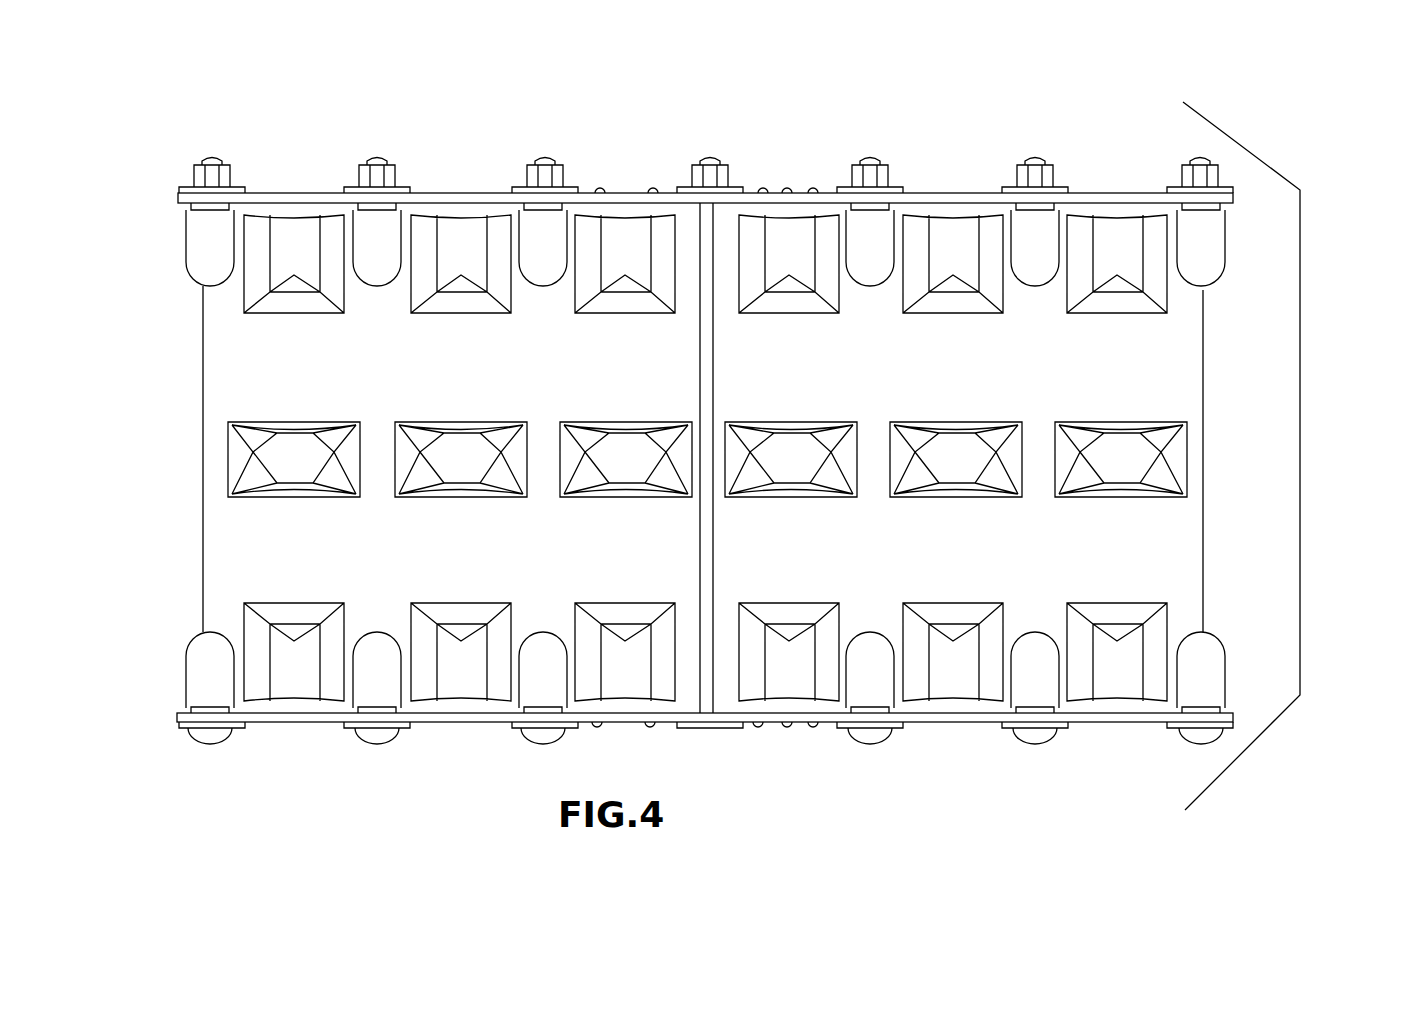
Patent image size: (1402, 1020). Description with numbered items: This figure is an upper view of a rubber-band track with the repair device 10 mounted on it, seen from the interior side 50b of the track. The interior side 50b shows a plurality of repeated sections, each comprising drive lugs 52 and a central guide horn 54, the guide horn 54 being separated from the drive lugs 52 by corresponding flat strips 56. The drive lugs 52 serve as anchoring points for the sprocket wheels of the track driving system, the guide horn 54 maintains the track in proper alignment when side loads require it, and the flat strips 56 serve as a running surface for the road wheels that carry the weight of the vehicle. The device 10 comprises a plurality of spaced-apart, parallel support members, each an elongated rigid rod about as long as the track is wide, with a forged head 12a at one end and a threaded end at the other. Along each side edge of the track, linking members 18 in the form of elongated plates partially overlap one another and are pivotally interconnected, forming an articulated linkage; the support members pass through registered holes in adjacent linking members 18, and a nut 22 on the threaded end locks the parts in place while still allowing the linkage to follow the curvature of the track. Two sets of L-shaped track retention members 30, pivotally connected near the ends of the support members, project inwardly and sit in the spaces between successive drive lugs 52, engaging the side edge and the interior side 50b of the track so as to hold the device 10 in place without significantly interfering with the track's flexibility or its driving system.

The device 10 is at (1300, 445).
The forged head 12a is at (870, 730).
The linking members 18 is at (1108, 200).
The nut 22 is at (707, 175).
The track retention members 30 is at (541, 240).
The interior side 50b is at (219, 448).
The drive lugs 52 is at (307, 243).
The central guide horn 54 is at (295, 473).
The flat strips 56 is at (253, 333).